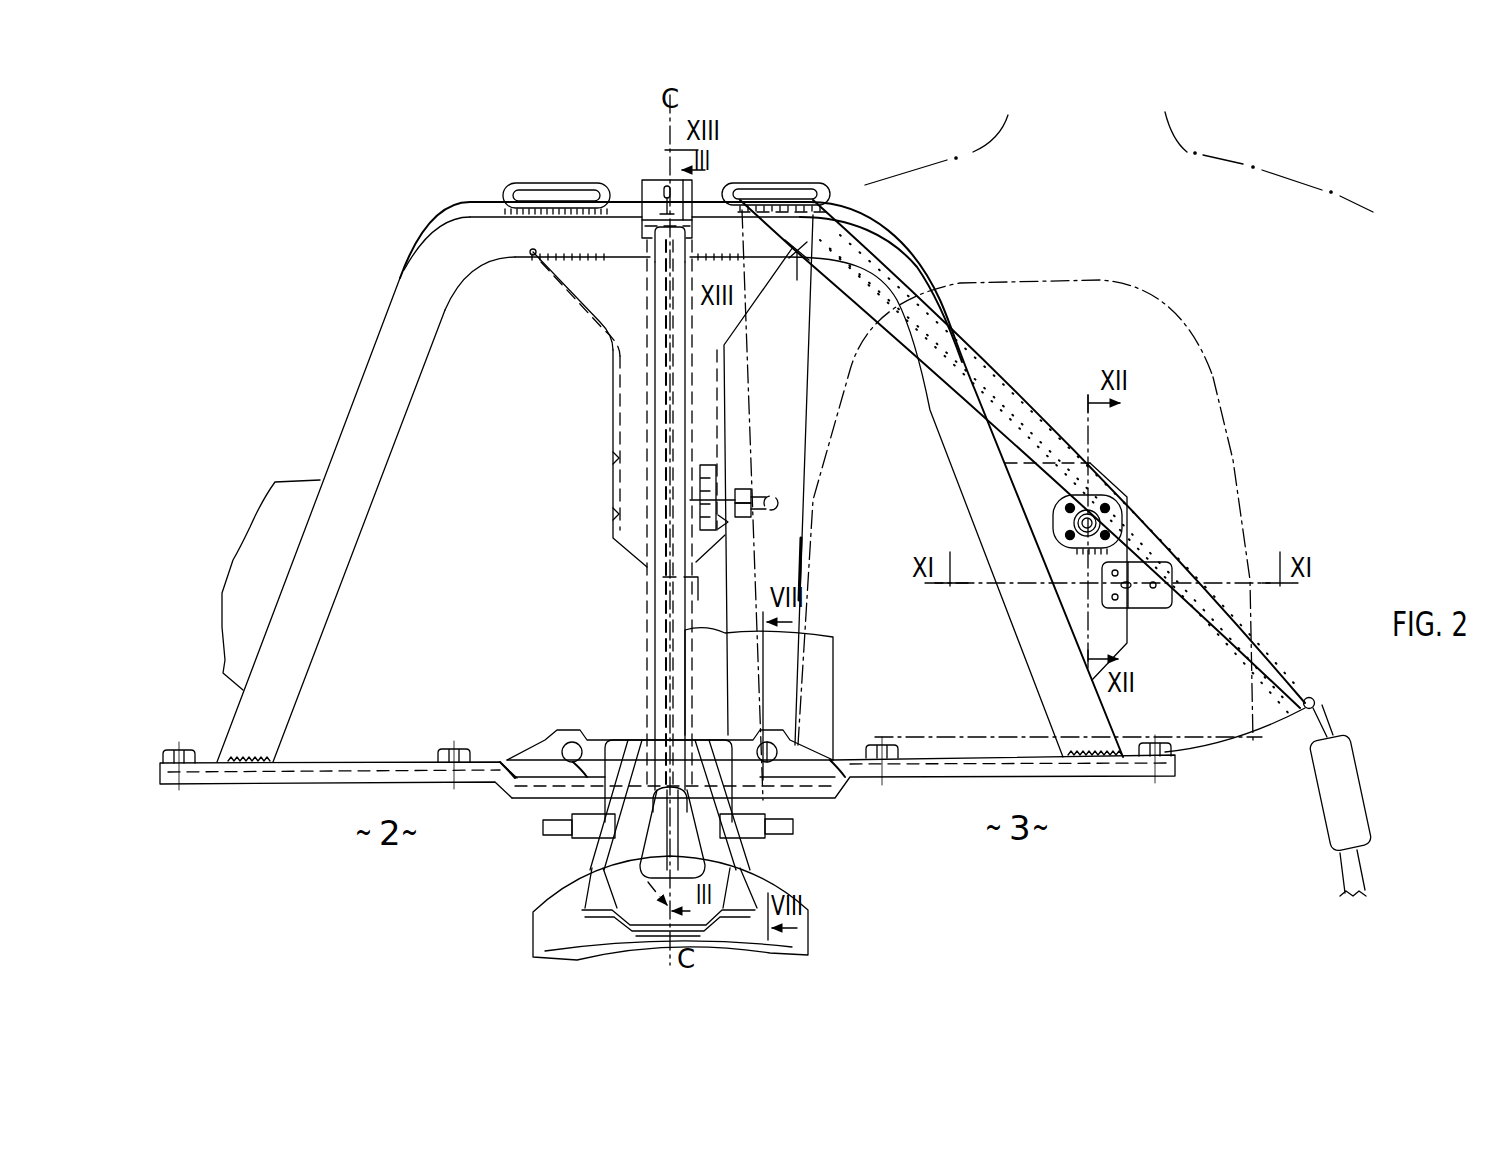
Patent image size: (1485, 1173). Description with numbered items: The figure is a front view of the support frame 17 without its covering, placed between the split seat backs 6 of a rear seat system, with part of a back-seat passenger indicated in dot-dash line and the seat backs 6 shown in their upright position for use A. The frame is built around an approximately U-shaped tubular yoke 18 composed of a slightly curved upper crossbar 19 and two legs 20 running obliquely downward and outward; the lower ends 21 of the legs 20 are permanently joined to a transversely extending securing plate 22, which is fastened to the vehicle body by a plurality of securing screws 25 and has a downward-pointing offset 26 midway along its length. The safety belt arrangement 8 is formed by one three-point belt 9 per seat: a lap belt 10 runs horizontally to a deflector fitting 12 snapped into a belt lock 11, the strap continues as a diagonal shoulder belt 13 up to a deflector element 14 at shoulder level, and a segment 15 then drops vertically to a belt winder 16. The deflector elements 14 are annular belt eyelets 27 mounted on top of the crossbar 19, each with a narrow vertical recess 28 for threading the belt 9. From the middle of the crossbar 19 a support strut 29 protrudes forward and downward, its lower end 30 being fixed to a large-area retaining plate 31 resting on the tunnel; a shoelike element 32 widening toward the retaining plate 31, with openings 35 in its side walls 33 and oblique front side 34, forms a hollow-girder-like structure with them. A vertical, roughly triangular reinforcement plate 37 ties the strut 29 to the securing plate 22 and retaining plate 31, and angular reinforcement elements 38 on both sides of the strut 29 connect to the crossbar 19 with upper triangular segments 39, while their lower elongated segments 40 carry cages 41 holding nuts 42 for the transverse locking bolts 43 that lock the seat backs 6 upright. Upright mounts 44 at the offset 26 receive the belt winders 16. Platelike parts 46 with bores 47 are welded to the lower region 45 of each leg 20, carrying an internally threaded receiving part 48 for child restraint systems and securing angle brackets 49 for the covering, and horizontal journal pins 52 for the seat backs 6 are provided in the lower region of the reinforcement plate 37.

The seat back 6 is at (1212, 372).
The safety belt arrangement 8 is at (1022, 382).
The three-point belt 9 is at (815, 408).
The lap belt 10 is at (1226, 740).
The belt lock 11 is at (1352, 794).
The deflector fitting 12 is at (1331, 722).
The diagonal shoulder belt 13 is at (977, 374).
The deflector element 14 is at (602, 186).
The belt strap segment 15 is at (803, 570).
The belt winder 16 is at (833, 650).
The support frame 17 is at (460, 202).
The tubular yoke 18 is at (400, 275).
The crossbar 19 is at (608, 264).
The leg 20 is at (330, 540).
The lower end of leg 21 is at (294, 757).
The securing plate 22 is at (312, 787).
The securing screw 25 is at (180, 748).
The offset 26 is at (589, 765).
The belt eyelet 27 is at (527, 187).
The vertical recess 28 is at (566, 195).
The support strut 29 is at (652, 610).
The lower end of support strut 30 is at (620, 935).
The retaining plate 31 is at (800, 950).
The shoelike element 32 is at (745, 775).
The side wall 33 is at (612, 852).
The front side 34 is at (737, 907).
The opening 35 is at (696, 854).
The reinforcement plate 37 is at (660, 450).
The angular reinforcement element 38 is at (608, 390).
The upper triangular segment 39 is at (578, 284).
The lower elongated segment 40 is at (695, 593).
The cage 41 is at (714, 470).
The nut 42 is at (728, 527).
The locking bolt 43 is at (760, 511).
The mount 44 is at (842, 784).
The lower region of arm 45 is at (1131, 616).
The platelike part 46 is at (1047, 465).
The bore 47 is at (1106, 503).
The receiving part 48 is at (1082, 549).
The securing angle bracket 49 is at (1158, 598).
The journal pin 52 is at (543, 829).
The upright position for use A is at (1245, 474).